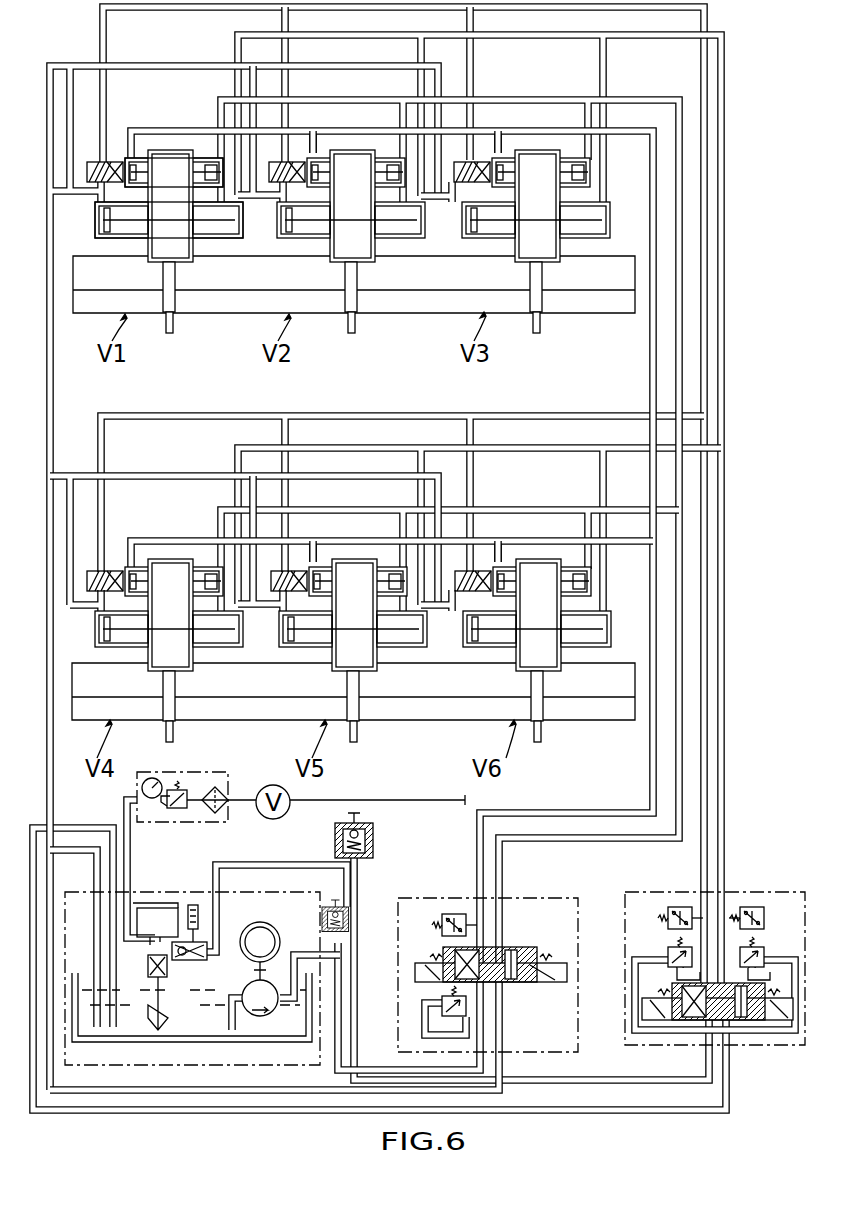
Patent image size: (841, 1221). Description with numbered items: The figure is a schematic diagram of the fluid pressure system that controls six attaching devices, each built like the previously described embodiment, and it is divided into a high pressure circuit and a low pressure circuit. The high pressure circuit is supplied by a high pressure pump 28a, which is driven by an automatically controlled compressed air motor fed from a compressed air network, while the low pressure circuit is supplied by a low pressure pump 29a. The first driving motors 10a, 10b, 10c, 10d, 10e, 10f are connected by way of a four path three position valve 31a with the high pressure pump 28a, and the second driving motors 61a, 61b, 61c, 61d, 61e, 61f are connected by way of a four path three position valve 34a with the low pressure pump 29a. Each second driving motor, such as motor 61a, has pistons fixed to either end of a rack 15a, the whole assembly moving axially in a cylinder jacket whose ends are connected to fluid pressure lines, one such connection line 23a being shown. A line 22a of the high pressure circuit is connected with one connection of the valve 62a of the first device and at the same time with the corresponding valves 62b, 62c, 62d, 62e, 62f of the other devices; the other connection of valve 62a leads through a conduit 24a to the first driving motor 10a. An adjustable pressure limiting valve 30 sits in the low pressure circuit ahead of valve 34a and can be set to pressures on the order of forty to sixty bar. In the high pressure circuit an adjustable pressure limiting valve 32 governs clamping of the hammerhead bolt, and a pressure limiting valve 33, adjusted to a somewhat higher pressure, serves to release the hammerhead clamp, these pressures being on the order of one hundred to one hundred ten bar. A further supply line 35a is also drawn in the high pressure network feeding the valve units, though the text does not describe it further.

The line of the high pressure circuit 22a is at (102, 36).
The valve 62a is at (95, 188).
The pressure supply line 35a is at (260, 32).
The connection line 23a is at (222, 96).
The second driving motor 61a is at (127, 158).
The rack 15a is at (203, 158).
The valve 62c is at (462, 150).
The second driving motor 61b is at (327, 163).
The second driving motor 61c is at (510, 163).
The conduit 24a is at (115, 233).
The valve 62b is at (280, 184).
The first driving motor 10a is at (125, 230).
The first driving motor 10b is at (300, 230).
The first driving motor 10c is at (484, 230).
The valve 62d is at (92, 572).
The valve 62e is at (280, 572).
The valve 62f is at (453, 573).
The second driving motor 61d is at (140, 563).
The second driving motor 61e is at (320, 572).
The second driving motor 61f is at (502, 572).
The first driving motor 10d is at (125, 634).
The first driving motor 10e is at (306, 636).
The first driving motor 10f is at (491, 636).
The high pressure pump 28a is at (146, 951).
The low pressure pump 29a is at (262, 1016).
The adjustable pressure limiting valve 30 is at (440, 1004).
The four path three position valve 34a is at (521, 948).
The adjustable pressure limiting valve 32 is at (667, 954).
The pressure limiting valve 33 is at (768, 952).
The four path three position valve 31a is at (753, 1022).